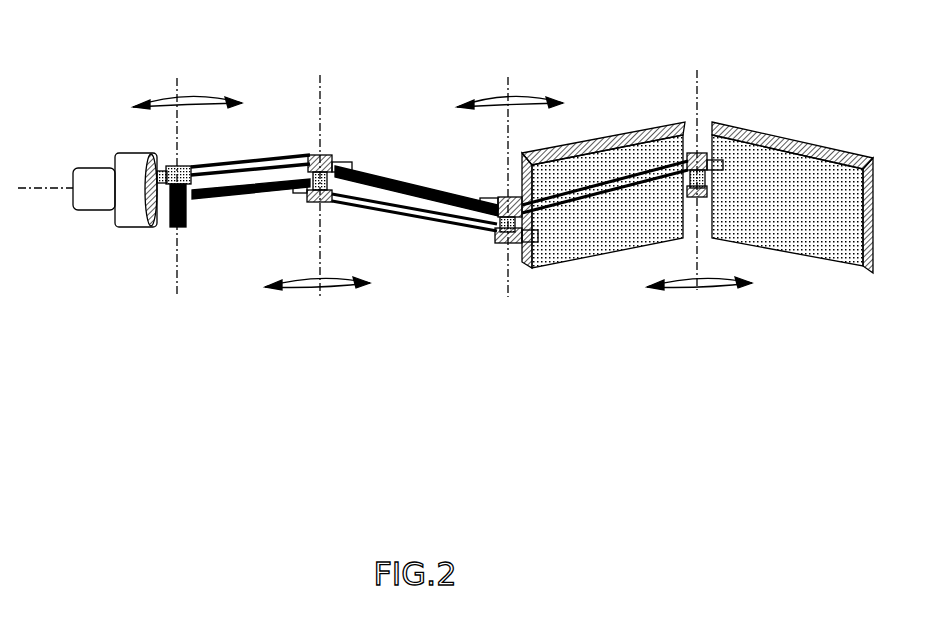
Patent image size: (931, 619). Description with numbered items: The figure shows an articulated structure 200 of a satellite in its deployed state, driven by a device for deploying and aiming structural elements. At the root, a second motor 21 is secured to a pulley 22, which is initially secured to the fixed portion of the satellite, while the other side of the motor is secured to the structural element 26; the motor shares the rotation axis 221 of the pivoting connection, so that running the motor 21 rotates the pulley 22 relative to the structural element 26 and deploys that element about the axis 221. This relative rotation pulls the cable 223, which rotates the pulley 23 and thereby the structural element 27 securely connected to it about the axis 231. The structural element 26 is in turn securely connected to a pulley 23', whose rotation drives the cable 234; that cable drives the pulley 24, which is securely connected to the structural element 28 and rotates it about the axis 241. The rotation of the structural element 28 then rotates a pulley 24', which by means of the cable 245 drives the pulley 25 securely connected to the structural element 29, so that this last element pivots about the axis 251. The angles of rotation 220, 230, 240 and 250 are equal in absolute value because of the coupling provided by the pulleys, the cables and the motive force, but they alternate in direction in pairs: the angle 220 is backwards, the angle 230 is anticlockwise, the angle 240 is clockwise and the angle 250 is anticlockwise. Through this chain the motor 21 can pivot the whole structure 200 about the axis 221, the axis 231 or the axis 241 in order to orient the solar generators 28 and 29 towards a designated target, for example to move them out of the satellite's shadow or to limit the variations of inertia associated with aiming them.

The structure 200 is at (420, 440).
The second motor 21 is at (190, 228).
The pulley 22 is at (186, 166).
The angle of rotation 220 is at (205, 90).
The rotation axis 221 is at (177, 78).
The cable 223 is at (258, 152).
The structural element 26 is at (262, 200).
The pulley 23 is at (353, 138).
The pulley 23' is at (326, 217).
The angle of rotation 230 is at (302, 294).
The axis 231 is at (322, 80).
The structural element 27 is at (432, 195).
The cable 234 is at (425, 225).
The pulley 24 is at (486, 261).
The pulley 24' is at (496, 182).
The angle of rotation 240 is at (533, 92).
The axis 241 is at (505, 88).
The cable 245 is at (638, 165).
The pulley 25 is at (728, 128).
The angle of rotation 250 is at (725, 293).
The axis 251 is at (697, 72).
The structural element 28 is at (573, 247).
The structural element 29 is at (835, 255).